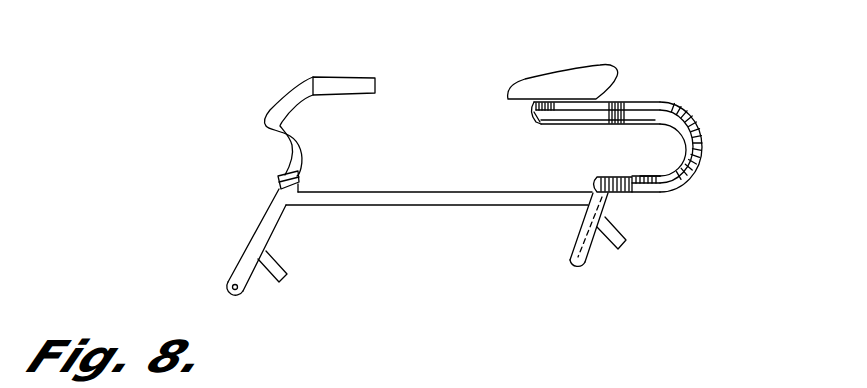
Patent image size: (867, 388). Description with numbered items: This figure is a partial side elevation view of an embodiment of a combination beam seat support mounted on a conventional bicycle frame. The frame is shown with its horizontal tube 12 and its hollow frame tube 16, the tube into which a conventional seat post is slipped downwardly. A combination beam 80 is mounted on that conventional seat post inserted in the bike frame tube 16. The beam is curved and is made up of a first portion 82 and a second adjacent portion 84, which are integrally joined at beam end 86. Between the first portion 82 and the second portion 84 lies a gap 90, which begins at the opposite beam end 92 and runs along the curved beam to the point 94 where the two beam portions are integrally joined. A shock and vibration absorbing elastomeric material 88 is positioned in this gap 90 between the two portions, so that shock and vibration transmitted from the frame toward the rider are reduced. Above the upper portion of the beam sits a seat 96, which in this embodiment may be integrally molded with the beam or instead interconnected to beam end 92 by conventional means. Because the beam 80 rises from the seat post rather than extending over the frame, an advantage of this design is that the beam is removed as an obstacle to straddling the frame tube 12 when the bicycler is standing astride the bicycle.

The horizontal tube 12 is at (368, 205).
The hollow frame tube 16 is at (587, 262).
The combination beam 80 is at (613, 142).
The first portion 82 is at (641, 192).
The second adjacent portion 84 is at (580, 124).
The beam end 86 is at (592, 184).
The shock and vibration absorbing elastomeric material 88 is at (574, 114).
The gap 90 is at (533, 106).
The beam end 92 is at (537, 123).
The point 94 is at (637, 176).
The integrally molded seat 96 is at (606, 67).